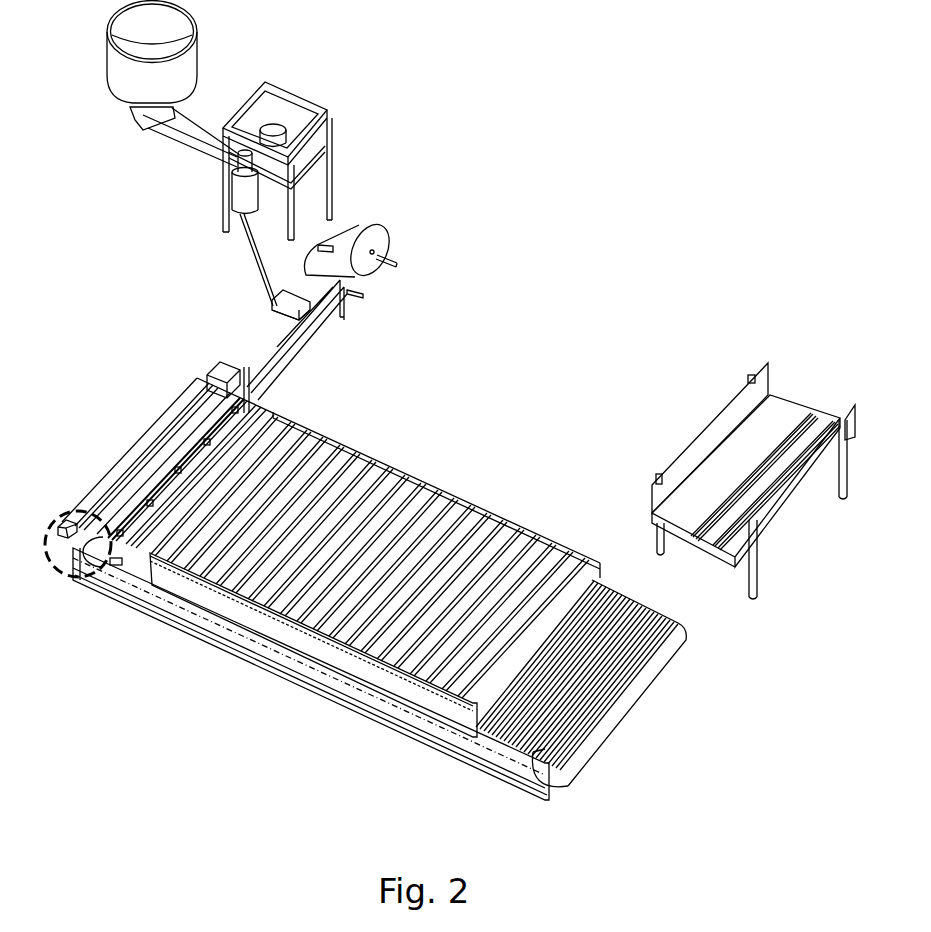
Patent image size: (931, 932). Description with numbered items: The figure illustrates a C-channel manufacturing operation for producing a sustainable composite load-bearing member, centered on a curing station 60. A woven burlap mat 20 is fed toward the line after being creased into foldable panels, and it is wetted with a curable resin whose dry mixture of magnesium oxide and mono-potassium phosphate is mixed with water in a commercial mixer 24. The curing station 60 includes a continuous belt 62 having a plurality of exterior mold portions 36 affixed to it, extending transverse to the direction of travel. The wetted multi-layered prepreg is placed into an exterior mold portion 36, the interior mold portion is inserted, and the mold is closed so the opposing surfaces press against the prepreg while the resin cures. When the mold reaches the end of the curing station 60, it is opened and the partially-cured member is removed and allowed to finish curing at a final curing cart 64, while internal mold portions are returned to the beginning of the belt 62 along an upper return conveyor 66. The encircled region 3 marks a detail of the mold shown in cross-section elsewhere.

The detail region shown in FIG. 3 is at (60, 518).
The woven burlap mat 20 is at (380, 241).
The commercial mixer 24 is at (237, 191).
The exterior mold portion 36 is at (638, 604).
The curing station 60 is at (540, 835).
The continuous belt 62 is at (580, 767).
The final curing cart 64 is at (777, 510).
The upper return conveyor 66 is at (406, 471).